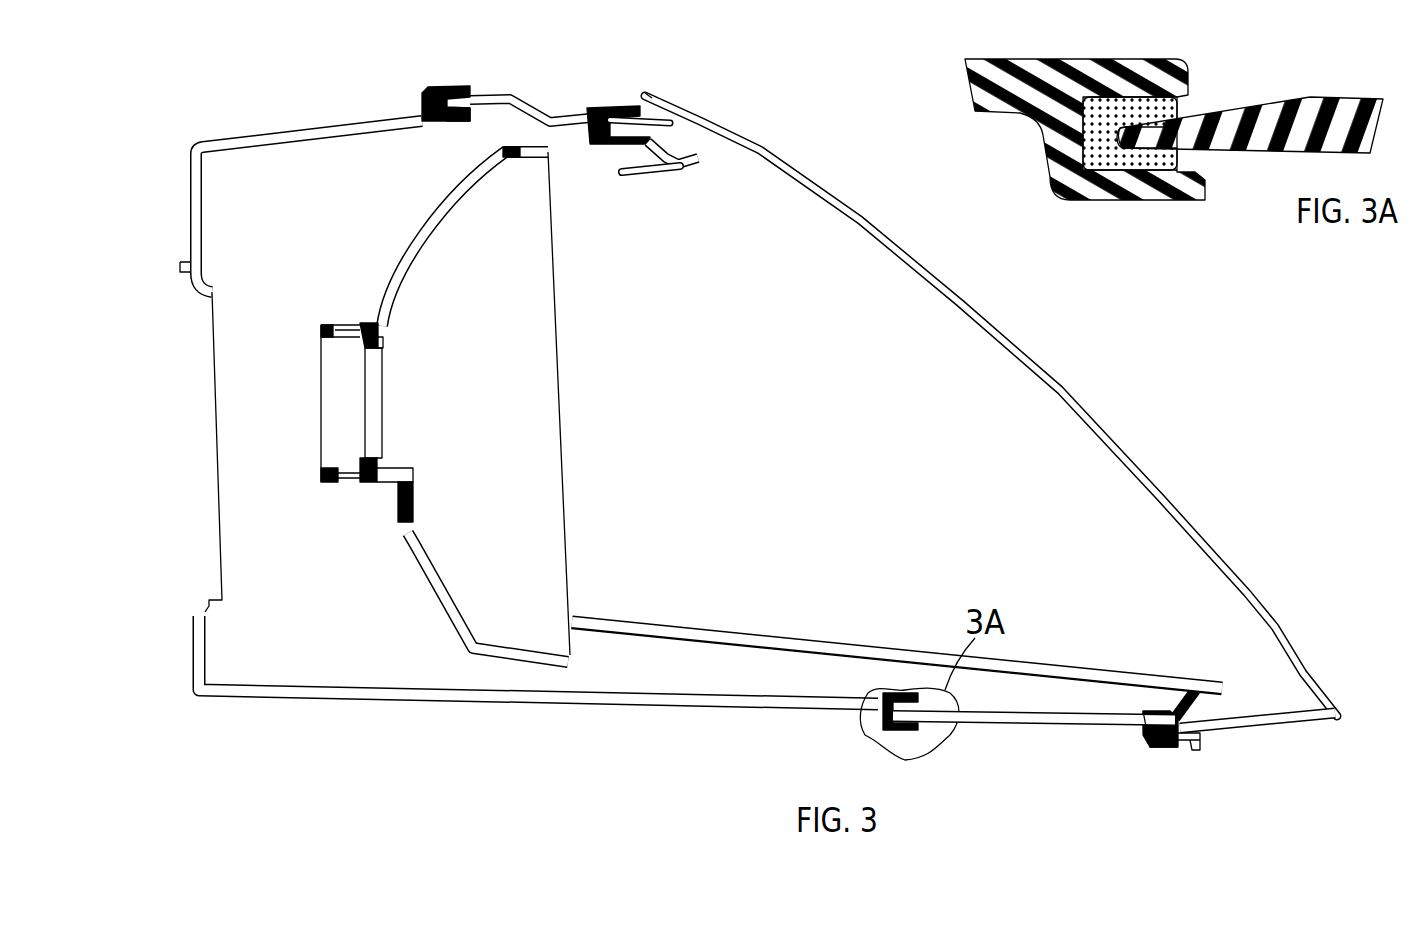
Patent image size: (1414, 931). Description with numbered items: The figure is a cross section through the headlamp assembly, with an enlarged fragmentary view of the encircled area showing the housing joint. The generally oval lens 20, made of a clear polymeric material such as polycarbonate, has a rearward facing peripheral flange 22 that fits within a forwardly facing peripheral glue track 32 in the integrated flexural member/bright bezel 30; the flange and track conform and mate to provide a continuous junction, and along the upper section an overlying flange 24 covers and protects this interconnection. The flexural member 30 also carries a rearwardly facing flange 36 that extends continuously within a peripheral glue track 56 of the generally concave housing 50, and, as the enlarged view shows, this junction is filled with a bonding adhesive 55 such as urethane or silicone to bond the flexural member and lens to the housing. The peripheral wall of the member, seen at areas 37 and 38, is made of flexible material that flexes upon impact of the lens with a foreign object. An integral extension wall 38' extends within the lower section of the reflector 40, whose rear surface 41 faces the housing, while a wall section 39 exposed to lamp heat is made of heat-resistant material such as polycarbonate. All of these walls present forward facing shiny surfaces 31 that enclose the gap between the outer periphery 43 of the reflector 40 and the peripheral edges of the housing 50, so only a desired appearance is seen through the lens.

In FIG. 3, the lens 20 is at (1066, 377).
In FIG. 3, the peripheral flange 22 is at (680, 124).
In FIG. 3, the overlying flange 24 is at (650, 95).
In FIG. 3, the integrated flexural member/bright bezel 30 is at (912, 640).
In FIG. 3, the forward facing internal continuous surfaces 31 is at (683, 168).
In FIG. 3, the peripheral glue track 32 is at (1150, 748).
In FIG. 3, the rearwardly facing flange 36 is at (470, 92).
In FIG. 3A, the rearwardly facing flange 36 is at (1217, 112).
In FIG. 3, the peripheral flexible wall 37 is at (528, 94).
In FIG. 3, the peripheral flexible wall 38 is at (1034, 772).
In FIG. 3, the extension wall 38' is at (896, 698).
In FIG. 3, the wall section 39 is at (650, 174).
In FIG. 3, the reflector 40 is at (544, 437).
In FIG. 3, the rear surface 41 is at (412, 567).
In FIG. 3, the outer periphery 43 is at (552, 151).
In FIG. 3, the housing 50 is at (368, 730).
In FIG. 3A, the bonding adhesive 55 is at (1173, 162).
In FIG. 3, the peripheral glue track 56 is at (476, 121).
In FIG. 3A, the peripheral glue track 56 is at (1192, 68).